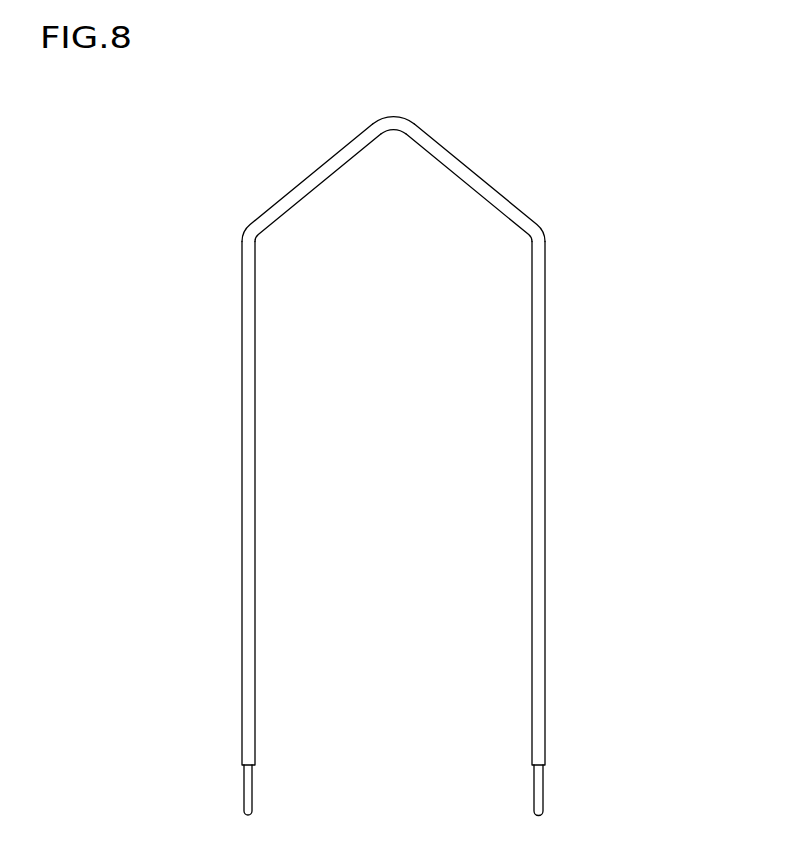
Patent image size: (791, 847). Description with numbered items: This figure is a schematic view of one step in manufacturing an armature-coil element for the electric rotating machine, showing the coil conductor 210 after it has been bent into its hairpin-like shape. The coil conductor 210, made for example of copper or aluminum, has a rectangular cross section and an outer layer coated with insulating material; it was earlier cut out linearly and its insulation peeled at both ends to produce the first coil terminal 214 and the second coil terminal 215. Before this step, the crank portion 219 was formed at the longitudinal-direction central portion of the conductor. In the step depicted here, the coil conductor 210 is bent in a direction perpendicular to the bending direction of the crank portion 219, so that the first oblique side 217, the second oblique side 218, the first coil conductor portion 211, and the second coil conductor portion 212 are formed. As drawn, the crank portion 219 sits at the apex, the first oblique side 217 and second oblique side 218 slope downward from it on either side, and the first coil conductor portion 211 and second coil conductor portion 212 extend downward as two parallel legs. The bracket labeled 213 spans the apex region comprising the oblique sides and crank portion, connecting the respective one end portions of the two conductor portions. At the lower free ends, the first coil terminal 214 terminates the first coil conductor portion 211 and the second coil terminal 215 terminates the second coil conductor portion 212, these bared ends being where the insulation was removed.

The coil conductor 210 is at (603, 257).
The first coil conductor portion 211 is at (253, 517).
The second coil conductor portion 212 is at (540, 488).
The bent portion 213 is at (547, 115).
The first coil terminal 214 is at (243, 800).
The second coil terminal 215 is at (543, 793).
The first oblique side 217 is at (303, 188).
The second oblique side 218 is at (493, 187).
The crank portion 219 is at (395, 137).